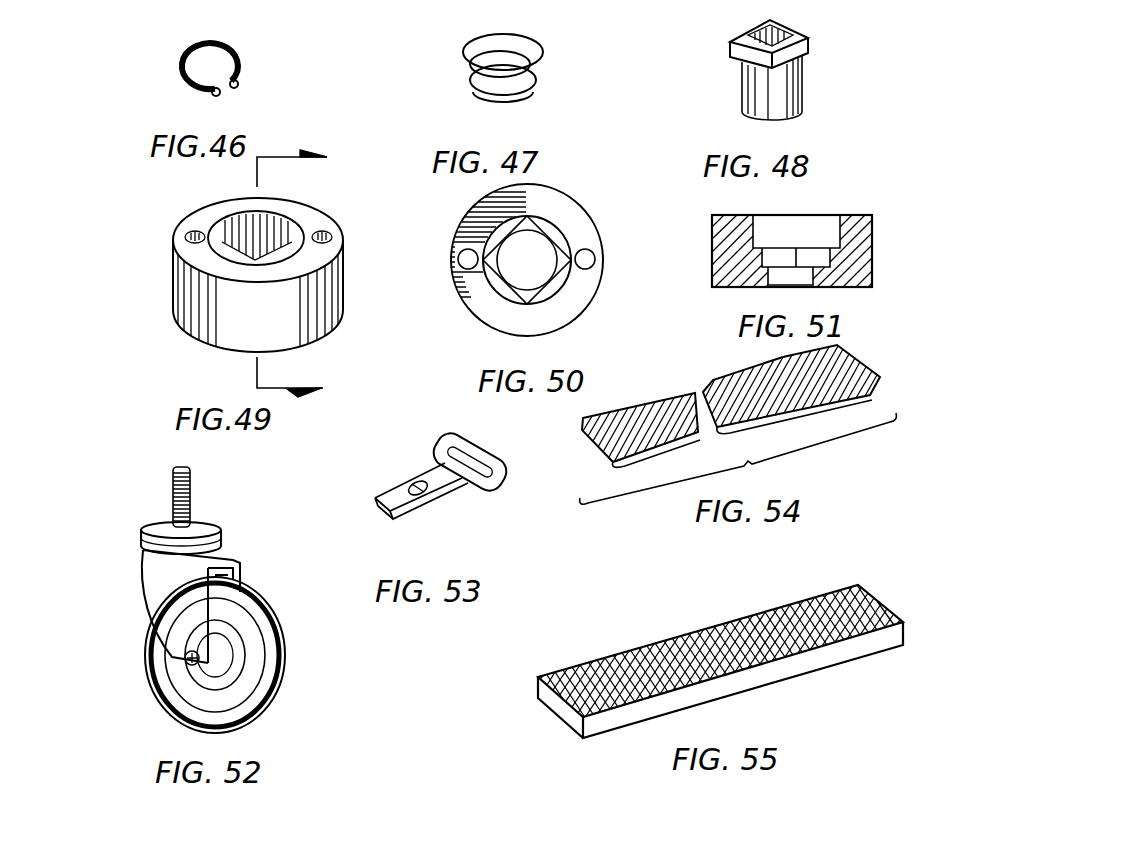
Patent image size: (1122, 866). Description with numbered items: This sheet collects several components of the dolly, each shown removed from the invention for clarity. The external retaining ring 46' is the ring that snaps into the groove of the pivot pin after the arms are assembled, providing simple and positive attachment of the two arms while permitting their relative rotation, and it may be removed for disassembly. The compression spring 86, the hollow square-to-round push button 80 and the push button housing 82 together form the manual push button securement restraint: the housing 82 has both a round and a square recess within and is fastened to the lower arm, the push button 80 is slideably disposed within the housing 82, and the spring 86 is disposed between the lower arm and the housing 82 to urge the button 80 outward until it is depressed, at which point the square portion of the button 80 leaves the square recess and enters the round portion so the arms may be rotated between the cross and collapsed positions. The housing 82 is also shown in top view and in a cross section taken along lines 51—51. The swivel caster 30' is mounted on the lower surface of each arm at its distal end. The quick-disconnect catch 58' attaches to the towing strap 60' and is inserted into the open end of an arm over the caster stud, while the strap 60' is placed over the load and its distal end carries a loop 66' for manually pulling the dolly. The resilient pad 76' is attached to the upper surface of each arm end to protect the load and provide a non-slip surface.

In FIG. 46, the external retaining ring 46' is at (257, 61).
In FIG. 47, the compression spring 86 is at (540, 66).
In FIG. 48, the square-to-round push button 80 is at (803, 63).
In FIG. 49, the section lines 51— 51 is at (310, 273).
In FIG. 49, the push button housing 82 is at (174, 313).
In FIG. 50, the push button housing 82 is at (470, 312).
In FIG. 51, the push button housing 82 is at (905, 172).
In FIG. 52, the caster 30' is at (262, 600).
In FIG. 53, the quick-disconnect catch 58' is at (436, 468).
In FIG. 54, the towing strap 60' is at (649, 400).
In FIG. 54, the loop 66' is at (795, 422).
In FIG. 55, the resilient pad 76' is at (720, 657).